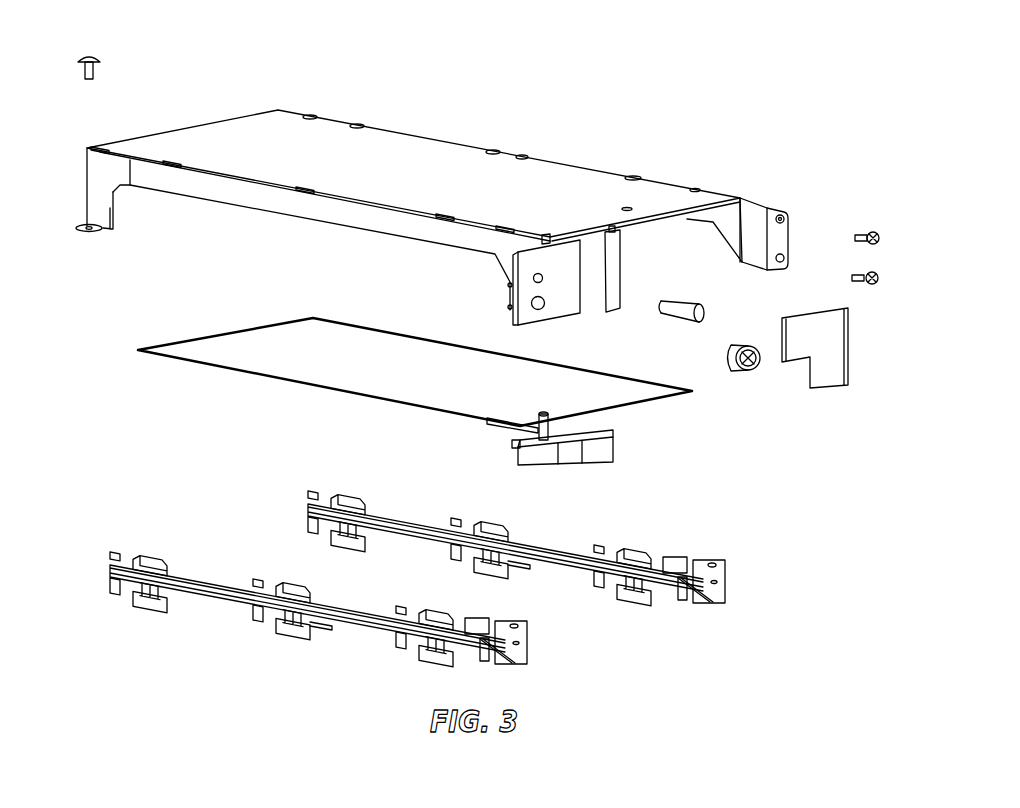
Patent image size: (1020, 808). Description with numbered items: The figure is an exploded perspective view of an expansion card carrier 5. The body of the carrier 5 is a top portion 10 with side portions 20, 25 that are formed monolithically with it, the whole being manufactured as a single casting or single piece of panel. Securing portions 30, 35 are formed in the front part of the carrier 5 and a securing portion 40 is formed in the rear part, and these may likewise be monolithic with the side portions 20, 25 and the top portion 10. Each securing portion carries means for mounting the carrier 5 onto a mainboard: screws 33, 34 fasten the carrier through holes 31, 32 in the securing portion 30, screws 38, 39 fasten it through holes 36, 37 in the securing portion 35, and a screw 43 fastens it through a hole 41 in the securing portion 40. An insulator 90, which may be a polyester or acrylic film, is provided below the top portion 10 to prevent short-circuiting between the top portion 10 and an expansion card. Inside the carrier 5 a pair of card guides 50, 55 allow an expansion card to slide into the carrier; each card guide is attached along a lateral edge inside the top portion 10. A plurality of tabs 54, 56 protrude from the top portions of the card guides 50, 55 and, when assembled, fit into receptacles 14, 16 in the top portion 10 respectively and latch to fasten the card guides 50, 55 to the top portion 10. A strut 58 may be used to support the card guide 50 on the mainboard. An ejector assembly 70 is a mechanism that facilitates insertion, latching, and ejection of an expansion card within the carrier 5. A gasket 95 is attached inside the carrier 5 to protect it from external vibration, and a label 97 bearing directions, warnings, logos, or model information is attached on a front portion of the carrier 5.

The carrier 5 is at (201, 38).
The top portion 10 is at (425, 143).
The receptacles 14 is at (175, 160).
The receptacles 16 is at (365, 126).
The side portion 20 is at (300, 210).
The side portion 25 is at (711, 215).
The securing portion 30 is at (570, 318).
The hole 31 is at (532, 281).
The hole 32 is at (530, 306).
The screw 33 is at (684, 300).
The screw 34 is at (741, 372).
The securing portion 35 is at (785, 218).
The hole 36 is at (782, 214).
The hole 37 is at (785, 257).
The screw 38 is at (862, 233).
The screw 39 is at (855, 272).
The securing portion 40 is at (113, 232).
The hole 41 is at (82, 224).
The screw 43 is at (101, 66).
The card guide 50 is at (360, 617).
The tabs 54 is at (118, 550).
The card guide 55 is at (557, 552).
The tabs 56 is at (318, 488).
The strut 58 is at (694, 603).
The ejector assembly 70 is at (615, 448).
The insulator 90 is at (350, 323).
The gasket 95 is at (620, 233).
The label 97 is at (850, 343).